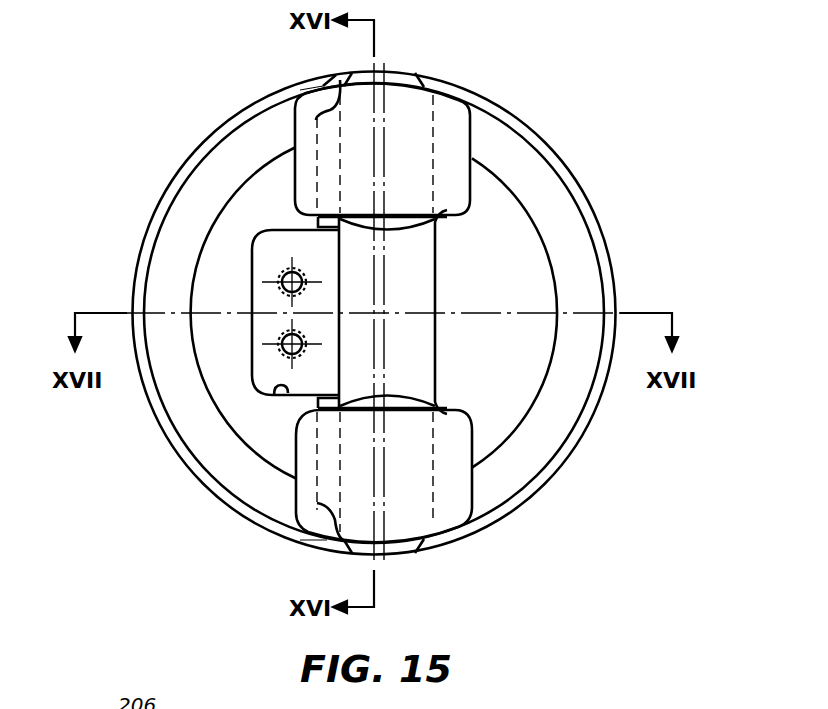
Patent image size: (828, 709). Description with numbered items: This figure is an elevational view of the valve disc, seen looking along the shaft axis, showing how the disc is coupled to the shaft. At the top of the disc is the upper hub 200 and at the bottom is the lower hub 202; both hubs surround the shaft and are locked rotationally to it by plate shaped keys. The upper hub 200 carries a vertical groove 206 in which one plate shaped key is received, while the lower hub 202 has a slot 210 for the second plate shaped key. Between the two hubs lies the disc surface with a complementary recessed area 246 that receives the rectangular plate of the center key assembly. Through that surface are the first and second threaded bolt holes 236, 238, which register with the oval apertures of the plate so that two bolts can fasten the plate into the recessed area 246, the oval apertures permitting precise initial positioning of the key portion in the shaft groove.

The upper hub 200 is at (453, 117).
The lower hub 202 is at (453, 507).
The vertical groove 206 is at (323, 85).
The slot 210 is at (327, 540).
The first threaded bolt hole 236 is at (278, 277).
The second threaded bolt hole 238 is at (278, 350).
The recessed area 246 is at (290, 396).